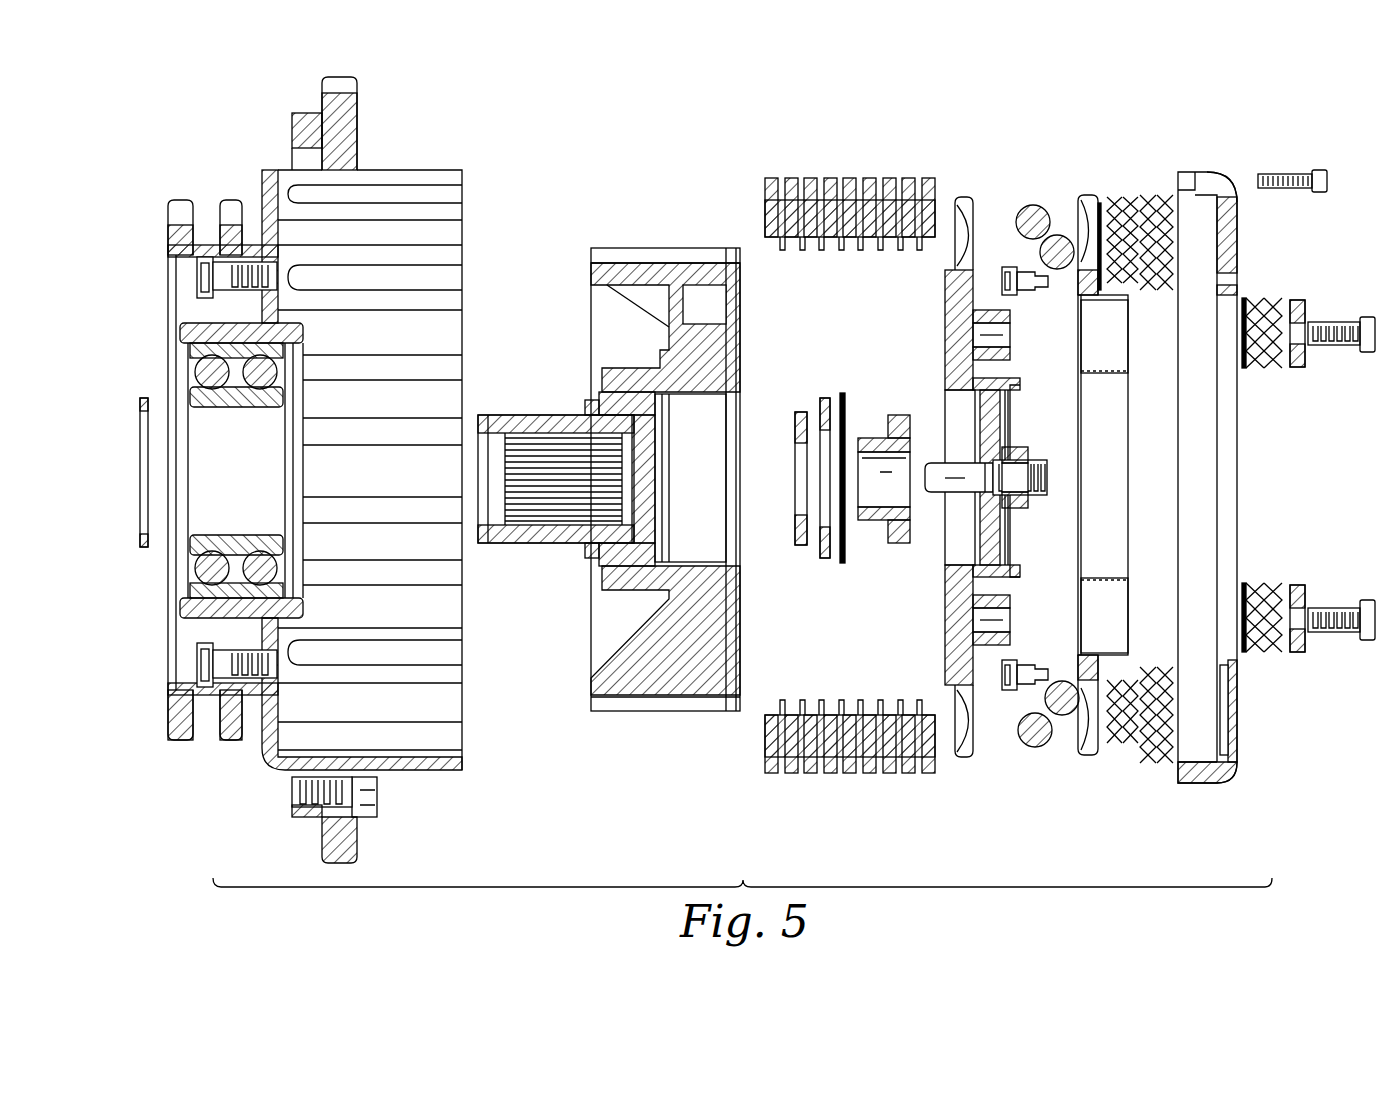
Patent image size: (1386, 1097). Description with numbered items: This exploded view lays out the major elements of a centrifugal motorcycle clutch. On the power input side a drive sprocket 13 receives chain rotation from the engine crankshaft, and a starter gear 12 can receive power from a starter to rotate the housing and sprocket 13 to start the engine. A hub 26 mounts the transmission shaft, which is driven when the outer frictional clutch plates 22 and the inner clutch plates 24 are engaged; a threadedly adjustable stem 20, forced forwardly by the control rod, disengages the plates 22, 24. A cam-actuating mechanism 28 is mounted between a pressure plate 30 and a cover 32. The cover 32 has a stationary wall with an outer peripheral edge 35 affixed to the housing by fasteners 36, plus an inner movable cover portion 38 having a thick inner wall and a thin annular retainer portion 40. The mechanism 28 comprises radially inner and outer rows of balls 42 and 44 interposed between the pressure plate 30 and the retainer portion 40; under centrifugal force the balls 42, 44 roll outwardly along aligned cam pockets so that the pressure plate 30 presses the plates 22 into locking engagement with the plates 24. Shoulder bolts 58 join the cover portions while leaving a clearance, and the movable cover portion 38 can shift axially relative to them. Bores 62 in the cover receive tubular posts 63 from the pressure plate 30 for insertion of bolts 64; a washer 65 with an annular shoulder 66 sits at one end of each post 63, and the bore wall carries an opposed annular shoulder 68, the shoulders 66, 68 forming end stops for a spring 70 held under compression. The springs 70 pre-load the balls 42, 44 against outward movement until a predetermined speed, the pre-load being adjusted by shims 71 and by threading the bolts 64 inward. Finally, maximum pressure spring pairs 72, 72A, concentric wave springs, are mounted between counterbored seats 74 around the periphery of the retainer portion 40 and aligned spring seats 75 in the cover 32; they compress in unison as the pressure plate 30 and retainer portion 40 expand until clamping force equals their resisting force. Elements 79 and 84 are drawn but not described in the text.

The starter gear 12 is at (358, 838).
The drive sprocket 13 is at (195, 740).
The threadedly adjustable stem 20 is at (1035, 497).
The outer frictional clutch plates 22 is at (850, 773).
The inner clutch plates 24 is at (860, 700).
The hub 26 is at (650, 690).
The cam-actuating mechanism 28 is at (953, 118).
The pressure plate 30 is at (952, 757).
The cover 32 is at (1253, 439).
The outer peripheral edge 35 is at (1212, 172).
The fasteners 36 is at (1292, 175).
The inner movable cover portion 38 is at (1118, 477).
The annular retainer portion 40 is at (1093, 757).
The balls 42 is at (1062, 715).
The balls 44 is at (1031, 748).
The shoulder bolts 58 is at (1010, 267).
The bores 62 is at (1095, 655).
The tubular posts 63 is at (1010, 640).
The bolts 64 is at (1365, 318).
The washer 65 is at (1305, 350).
The annular shoulder 66 is at (1300, 367).
The annular shoulder 68 is at (1085, 582).
The spring 70 is at (1255, 583).
The shims 71 is at (1245, 583).
The maximum pressure spring 72 is at (1160, 765).
The maximum pressure spring 72A is at (1112, 745).
The counterbored seats 74 is at (1101, 215).
The spring seats 75 is at (1222, 735).
The sleeve 79 is at (1000, 415).
The nut 84 is at (1028, 450).